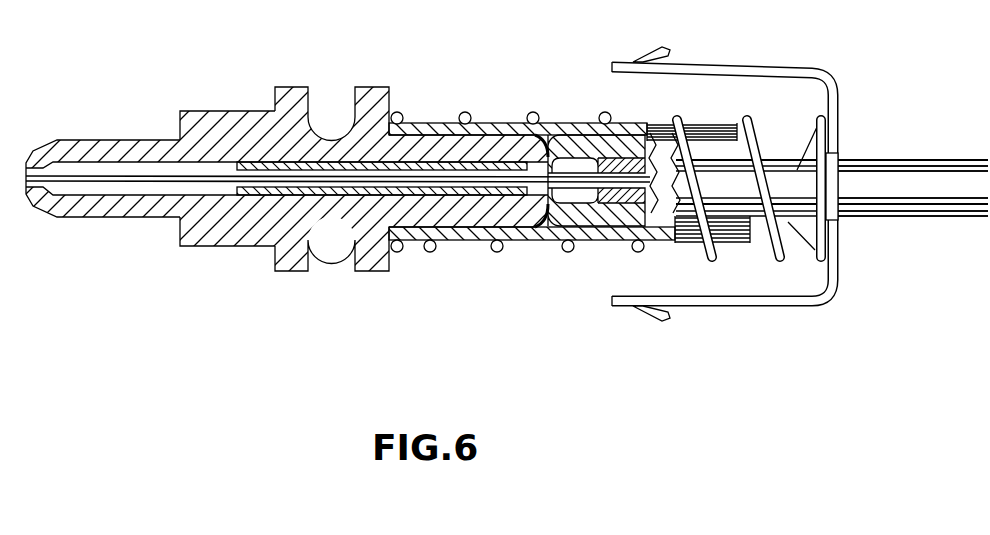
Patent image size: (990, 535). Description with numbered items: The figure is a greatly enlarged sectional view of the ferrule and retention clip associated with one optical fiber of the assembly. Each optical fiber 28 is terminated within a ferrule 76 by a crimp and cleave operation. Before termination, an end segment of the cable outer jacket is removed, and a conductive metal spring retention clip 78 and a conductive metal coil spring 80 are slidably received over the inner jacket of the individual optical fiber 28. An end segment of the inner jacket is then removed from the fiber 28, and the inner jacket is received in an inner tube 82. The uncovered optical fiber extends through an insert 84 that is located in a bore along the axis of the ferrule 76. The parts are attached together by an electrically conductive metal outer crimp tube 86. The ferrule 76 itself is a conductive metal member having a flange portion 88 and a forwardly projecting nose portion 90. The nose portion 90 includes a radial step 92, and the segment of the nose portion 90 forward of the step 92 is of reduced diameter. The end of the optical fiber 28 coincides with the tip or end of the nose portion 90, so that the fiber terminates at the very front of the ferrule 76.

The optical fiber 28 is at (113, 183).
The ferrule 76 is at (422, 212).
The spring retention clip 78 is at (797, 69).
The coil spring 80 is at (787, 250).
The inner tube 82 is at (578, 142).
The insert 84 is at (423, 167).
The outer crimp tube 86 is at (522, 238).
The flange portion 88 is at (300, 272).
The nose portion 90 is at (72, 146).
The radial step 92 is at (182, 232).